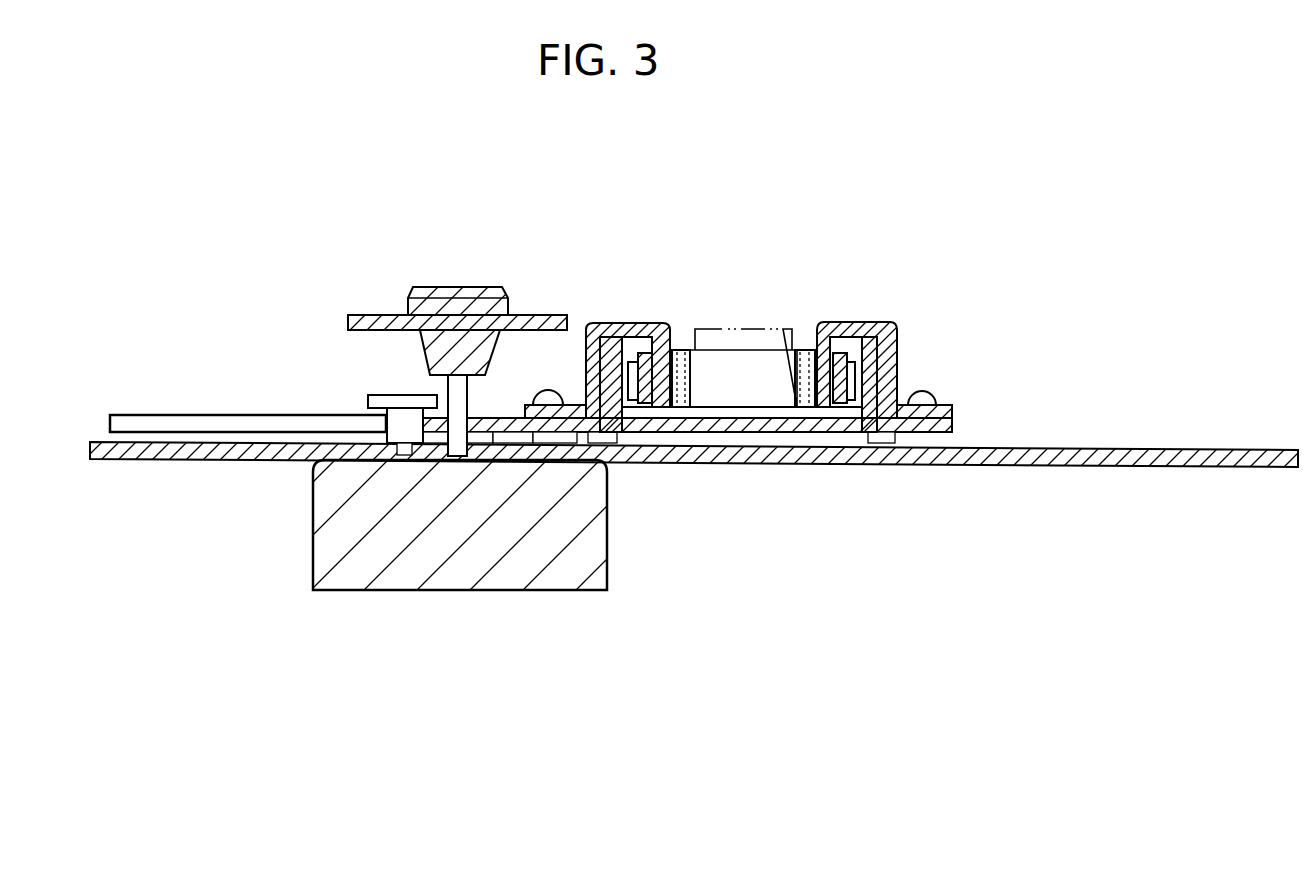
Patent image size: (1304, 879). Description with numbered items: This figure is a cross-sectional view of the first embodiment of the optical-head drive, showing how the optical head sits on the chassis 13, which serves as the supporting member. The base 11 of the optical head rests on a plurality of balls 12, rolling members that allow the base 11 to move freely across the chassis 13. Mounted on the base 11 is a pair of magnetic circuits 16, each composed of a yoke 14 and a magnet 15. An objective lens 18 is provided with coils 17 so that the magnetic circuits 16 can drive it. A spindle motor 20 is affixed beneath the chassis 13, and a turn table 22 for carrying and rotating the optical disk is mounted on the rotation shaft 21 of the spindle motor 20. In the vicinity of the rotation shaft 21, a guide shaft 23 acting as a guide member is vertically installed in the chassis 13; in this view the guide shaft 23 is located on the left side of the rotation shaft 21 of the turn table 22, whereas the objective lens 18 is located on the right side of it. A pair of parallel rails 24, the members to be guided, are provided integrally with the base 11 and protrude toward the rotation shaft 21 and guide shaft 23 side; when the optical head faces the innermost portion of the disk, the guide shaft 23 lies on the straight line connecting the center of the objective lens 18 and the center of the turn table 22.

The base 11 is at (957, 425).
The balls 12 is at (612, 450).
The chassis 13 is at (1210, 450).
The yoke 14 is at (652, 322).
The magnet 15 is at (611, 325).
The magnetic circuits 16 is at (585, 318).
The coils 17 is at (690, 350).
The objective lens 18 is at (748, 328).
The spindle motor 20 is at (312, 572).
The rotation shaft 21 is at (447, 396).
The turn table 22 is at (370, 315).
The guide shaft 23 is at (370, 395).
The rails 24 is at (168, 415).